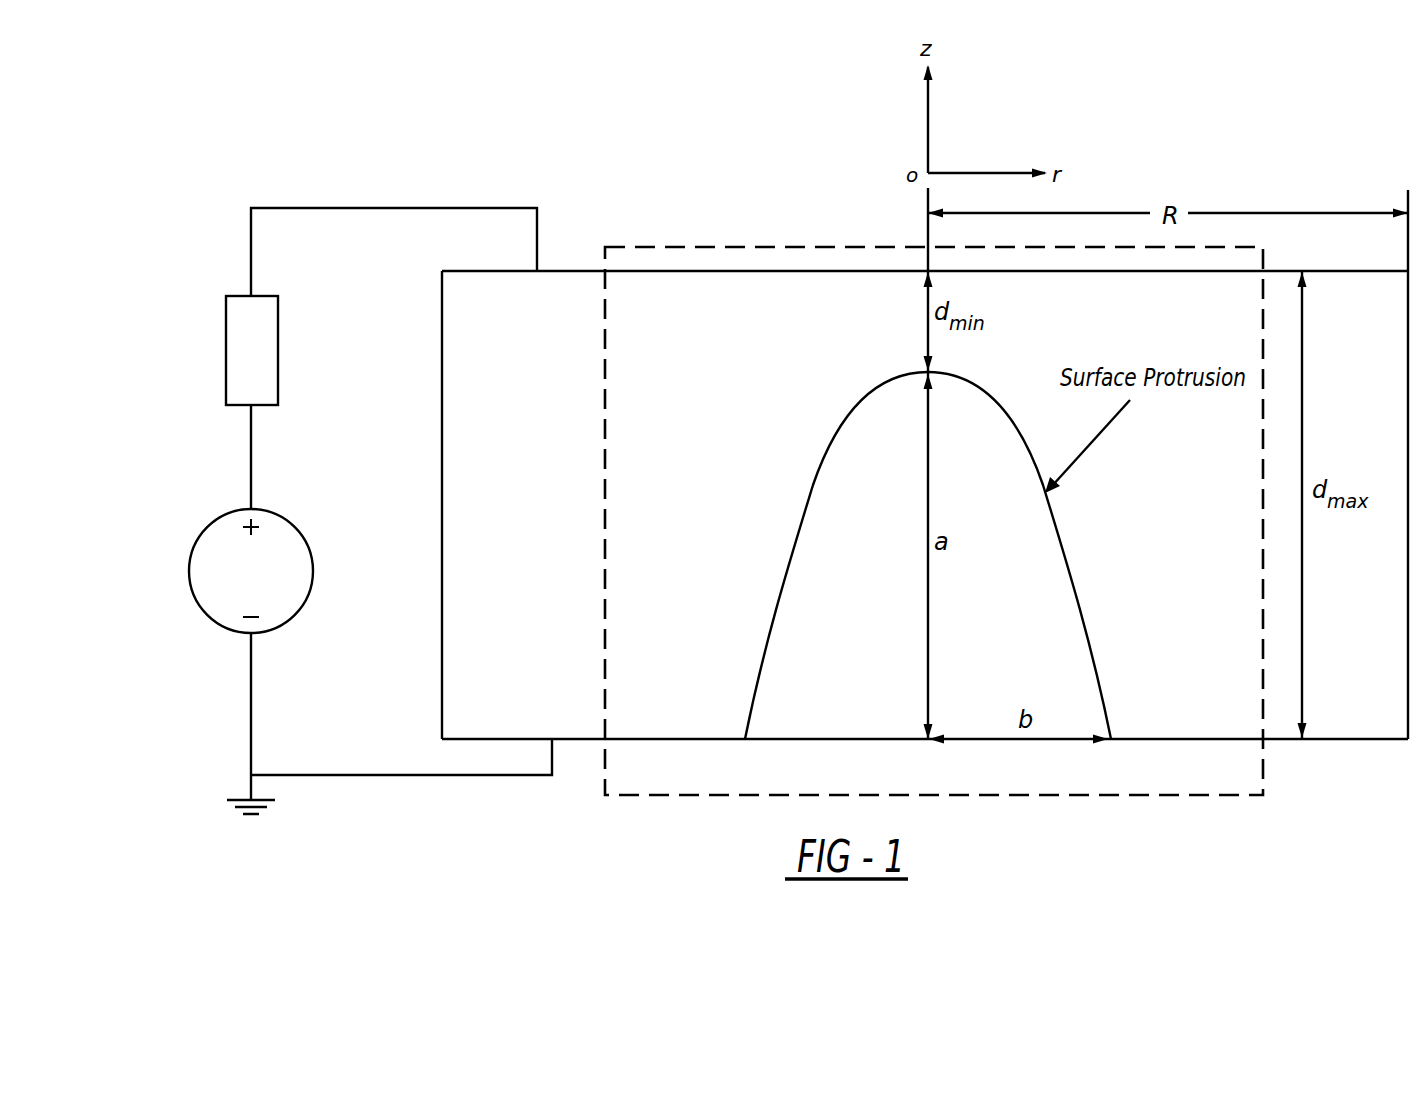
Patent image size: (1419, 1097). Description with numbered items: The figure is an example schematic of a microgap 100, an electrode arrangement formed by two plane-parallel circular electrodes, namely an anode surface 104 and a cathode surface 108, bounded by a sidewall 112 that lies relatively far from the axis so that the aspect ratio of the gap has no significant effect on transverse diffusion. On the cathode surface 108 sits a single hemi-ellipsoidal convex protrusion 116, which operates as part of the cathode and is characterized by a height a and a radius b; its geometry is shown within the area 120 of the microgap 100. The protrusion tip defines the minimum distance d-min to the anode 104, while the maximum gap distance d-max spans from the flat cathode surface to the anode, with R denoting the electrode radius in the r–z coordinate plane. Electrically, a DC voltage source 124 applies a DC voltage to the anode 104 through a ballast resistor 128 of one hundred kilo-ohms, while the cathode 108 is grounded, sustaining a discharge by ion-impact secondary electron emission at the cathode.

The microgap 100 is at (466, 106).
The anode surface 104 is at (570, 271).
The cathode surface 108 is at (581, 740).
The sidewall 112 is at (442, 528).
The convex protrusion 116 is at (805, 502).
The area 120 is at (722, 246).
The DC voltage source 124 is at (210, 521).
The ballast resistor 128 is at (226, 323).